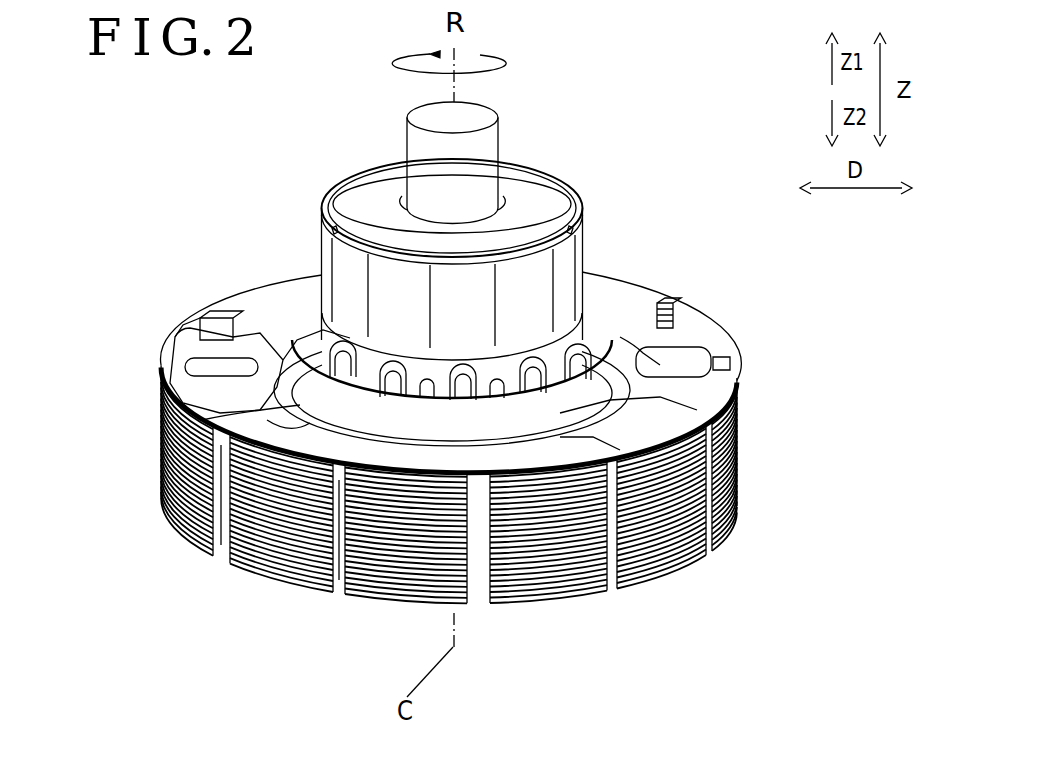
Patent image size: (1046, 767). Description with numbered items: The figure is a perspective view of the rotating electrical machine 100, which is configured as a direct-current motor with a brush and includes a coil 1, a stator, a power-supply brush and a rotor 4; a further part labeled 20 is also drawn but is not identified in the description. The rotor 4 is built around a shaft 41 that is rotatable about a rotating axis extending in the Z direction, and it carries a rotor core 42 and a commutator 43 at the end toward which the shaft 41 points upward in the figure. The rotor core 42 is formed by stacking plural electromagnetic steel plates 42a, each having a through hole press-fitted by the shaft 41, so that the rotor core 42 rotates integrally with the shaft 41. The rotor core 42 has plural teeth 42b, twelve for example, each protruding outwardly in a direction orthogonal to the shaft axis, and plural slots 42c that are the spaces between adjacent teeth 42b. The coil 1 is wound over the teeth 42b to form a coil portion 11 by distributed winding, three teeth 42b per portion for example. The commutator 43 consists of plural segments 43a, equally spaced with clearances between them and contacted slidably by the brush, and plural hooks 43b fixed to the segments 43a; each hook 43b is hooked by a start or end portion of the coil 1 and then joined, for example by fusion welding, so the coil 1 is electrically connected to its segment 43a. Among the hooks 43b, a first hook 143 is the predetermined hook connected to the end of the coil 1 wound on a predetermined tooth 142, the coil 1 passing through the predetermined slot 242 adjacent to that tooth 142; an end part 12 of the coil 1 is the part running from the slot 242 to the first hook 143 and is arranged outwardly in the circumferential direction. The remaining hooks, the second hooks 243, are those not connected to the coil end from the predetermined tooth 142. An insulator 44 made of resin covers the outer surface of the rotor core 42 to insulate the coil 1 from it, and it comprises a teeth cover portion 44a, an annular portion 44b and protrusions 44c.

The rotating electrical machine 100 is at (617, 97).
The rotor 20 is at (350, 152).
The rotor 4 is at (498, 117).
The shaft 41 is at (452, 118).
The commutator 43 is at (530, 160).
The segments 43a is at (318, 238).
The hooks 43b is at (282, 296).
The rotor core 42 is at (682, 580).
The electromagnetic steel plates 42a is at (731, 513).
The teeth 42b is at (628, 320).
The slots 42c is at (215, 314).
The coil 1 is at (575, 420).
The coil portion 11 is at (640, 345).
The end part 12 is at (320, 380).
The predetermined tooth 142 is at (247, 522).
The predetermined slot 242 is at (222, 525).
The first hook 143 is at (296, 452).
The second hooks 243 is at (583, 300).
The insulator 44 is at (252, 326).
The teeth cover portion 44a is at (163, 440).
The annular portion 44b is at (352, 440).
The protrusions 44c is at (300, 425).